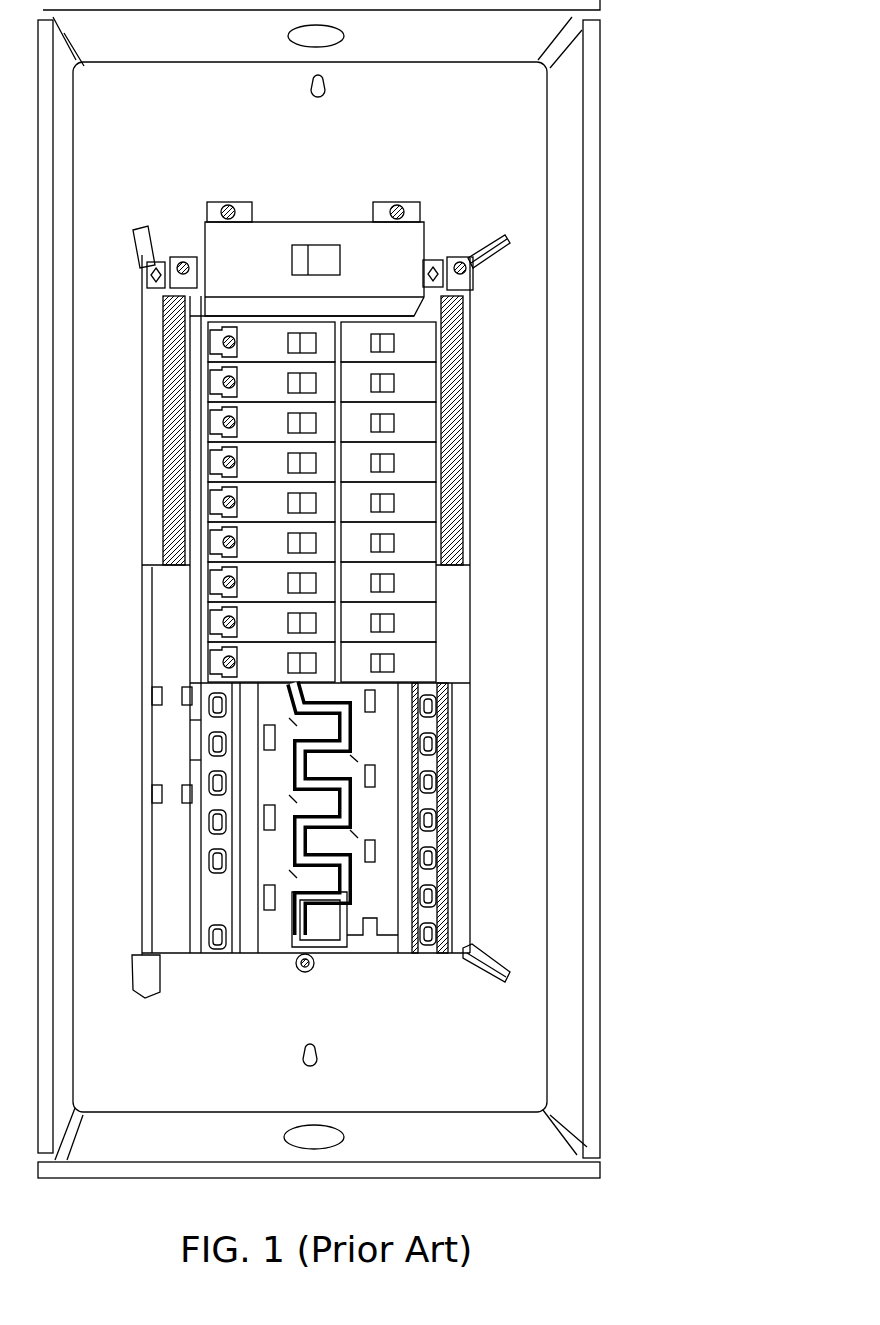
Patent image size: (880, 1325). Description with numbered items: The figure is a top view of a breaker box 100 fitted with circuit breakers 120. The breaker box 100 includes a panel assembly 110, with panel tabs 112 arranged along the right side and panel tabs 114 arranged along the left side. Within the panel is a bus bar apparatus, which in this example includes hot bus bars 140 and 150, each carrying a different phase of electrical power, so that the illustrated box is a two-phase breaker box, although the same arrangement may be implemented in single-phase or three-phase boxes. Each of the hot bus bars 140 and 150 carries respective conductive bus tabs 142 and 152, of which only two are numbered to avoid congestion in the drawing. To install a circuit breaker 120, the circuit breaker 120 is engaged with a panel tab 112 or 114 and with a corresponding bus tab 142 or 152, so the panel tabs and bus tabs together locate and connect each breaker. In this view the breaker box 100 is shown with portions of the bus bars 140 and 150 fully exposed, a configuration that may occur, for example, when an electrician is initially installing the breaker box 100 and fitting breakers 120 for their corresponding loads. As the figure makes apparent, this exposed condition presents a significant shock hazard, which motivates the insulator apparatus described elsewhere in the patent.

The breaker box 100 is at (583, 82).
The panel assembly 110 is at (447, 262).
The circuit breakers 120 is at (410, 635).
The panel tabs 112 is at (428, 700).
The panel tabs 114 is at (213, 868).
The hot bus bar 150 is at (255, 900).
The bus tabs 152 is at (318, 900).
The bus tabs 142 is at (320, 945).
The hot bus bar 140 is at (380, 930).